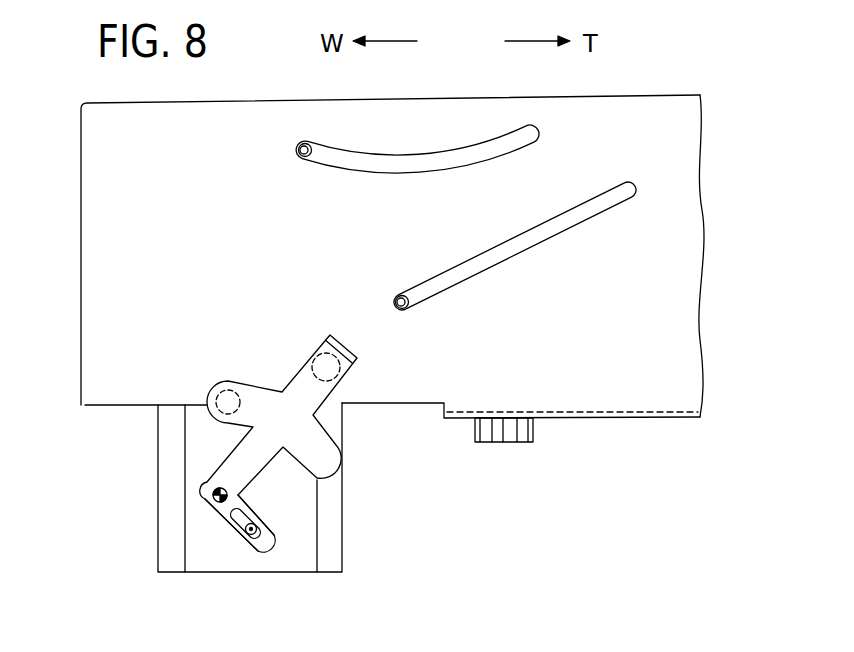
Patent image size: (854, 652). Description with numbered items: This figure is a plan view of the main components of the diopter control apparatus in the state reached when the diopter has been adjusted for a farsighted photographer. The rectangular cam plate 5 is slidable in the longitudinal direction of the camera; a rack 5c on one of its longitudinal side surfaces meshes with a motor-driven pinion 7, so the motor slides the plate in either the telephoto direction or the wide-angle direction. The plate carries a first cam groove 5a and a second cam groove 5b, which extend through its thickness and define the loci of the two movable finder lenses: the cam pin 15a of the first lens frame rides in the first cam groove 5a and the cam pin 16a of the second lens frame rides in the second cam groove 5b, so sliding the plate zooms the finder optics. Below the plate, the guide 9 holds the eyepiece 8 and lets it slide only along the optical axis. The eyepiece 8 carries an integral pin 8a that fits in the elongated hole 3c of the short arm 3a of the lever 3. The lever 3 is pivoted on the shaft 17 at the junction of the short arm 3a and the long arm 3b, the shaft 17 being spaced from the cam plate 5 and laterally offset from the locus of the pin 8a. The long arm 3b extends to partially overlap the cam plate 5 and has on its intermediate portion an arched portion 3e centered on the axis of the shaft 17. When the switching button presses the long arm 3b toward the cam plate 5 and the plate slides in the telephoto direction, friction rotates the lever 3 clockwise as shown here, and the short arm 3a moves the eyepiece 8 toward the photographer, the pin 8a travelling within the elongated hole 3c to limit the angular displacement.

The cam plate 5 is at (103, 240).
The first cam groove 5a is at (402, 173).
The second cam groove 5b is at (550, 237).
The rack 5c is at (617, 420).
The pinion 7 is at (497, 437).
The cam pin 15a is at (310, 160).
The cam pin 16a is at (408, 307).
The guide 9 is at (160, 558).
The lever 3 is at (250, 452).
The short arm 3a is at (267, 547).
The long arm 3b is at (337, 395).
The elongated hole 3c is at (184, 512).
The arched portion 3e is at (259, 381).
The eyepiece 8 is at (288, 547).
The pin 8a is at (184, 543).
The shaft 17 is at (212, 499).